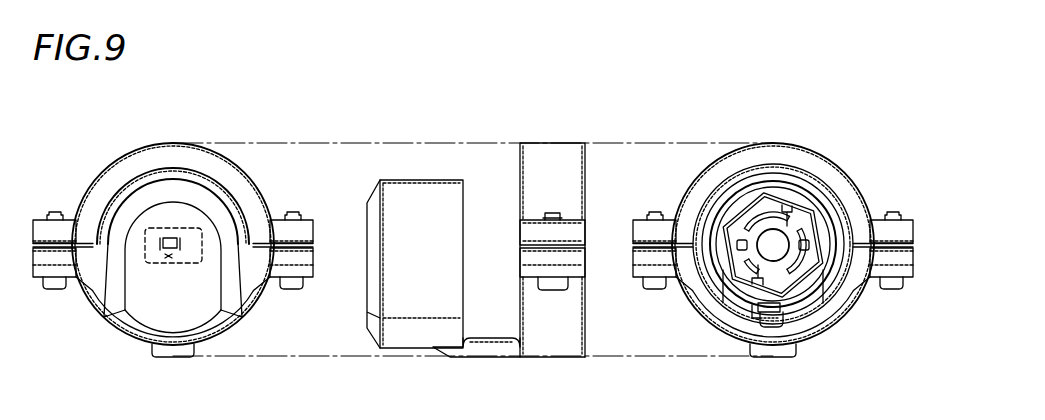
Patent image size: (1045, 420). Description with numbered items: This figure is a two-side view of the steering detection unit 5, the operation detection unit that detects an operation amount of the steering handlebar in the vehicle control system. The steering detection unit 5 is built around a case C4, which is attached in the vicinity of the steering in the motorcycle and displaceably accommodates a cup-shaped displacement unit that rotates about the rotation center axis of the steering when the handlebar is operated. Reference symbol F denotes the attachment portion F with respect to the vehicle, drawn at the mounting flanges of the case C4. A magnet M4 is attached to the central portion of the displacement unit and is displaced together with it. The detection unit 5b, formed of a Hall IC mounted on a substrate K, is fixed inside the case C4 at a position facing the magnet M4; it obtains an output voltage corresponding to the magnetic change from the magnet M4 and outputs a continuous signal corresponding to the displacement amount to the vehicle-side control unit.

The steering detection unit 5 is at (94, 128).
The attachment portion F is at (156, 150).
The case C4 is at (137, 347).
The substrate K is at (195, 226).
The magnet M4 is at (145, 235).
The detection unit 5b is at (185, 258).